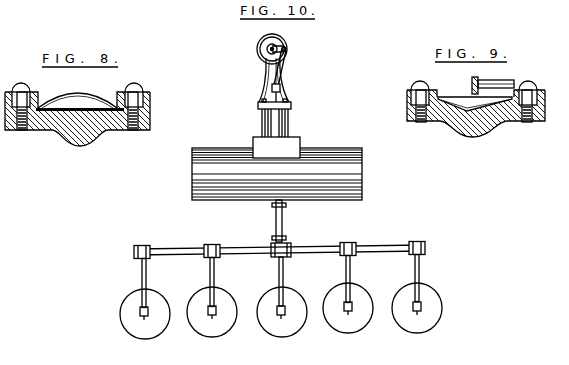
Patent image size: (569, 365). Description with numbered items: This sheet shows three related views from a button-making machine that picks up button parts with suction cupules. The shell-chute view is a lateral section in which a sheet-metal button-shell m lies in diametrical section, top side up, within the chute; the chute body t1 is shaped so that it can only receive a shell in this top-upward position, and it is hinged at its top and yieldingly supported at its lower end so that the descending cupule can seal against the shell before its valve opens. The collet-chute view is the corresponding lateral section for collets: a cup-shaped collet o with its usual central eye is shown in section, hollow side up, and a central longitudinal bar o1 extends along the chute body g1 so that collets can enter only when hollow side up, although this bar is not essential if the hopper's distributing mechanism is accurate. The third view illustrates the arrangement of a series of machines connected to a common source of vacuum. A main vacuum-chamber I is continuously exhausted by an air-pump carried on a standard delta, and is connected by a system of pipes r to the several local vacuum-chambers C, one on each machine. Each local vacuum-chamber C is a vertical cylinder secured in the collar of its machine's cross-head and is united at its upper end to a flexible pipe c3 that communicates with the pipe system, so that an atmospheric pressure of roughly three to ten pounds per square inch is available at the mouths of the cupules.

In FIG. 8, the button-shell m is at (77, 94).
In FIG. 8, the lens holder casing t1 is at (77, 113).
In FIG. 9, the collet o is at (461, 101).
In FIG. 9, the central longitudinal bar o1 is at (471, 63).
In FIG. 9, the holder casing g1 is at (476, 107).
In FIG. 10, the pedestal with wheel delta is at (276, 85).
In FIG. 10, the main vacuum-chamber I is at (277, 168).
In FIG. 10, the system of pipes r is at (279, 229).
In FIG. 10, the flexible pipe c3 is at (285, 288).
In FIG. 10, the local vacuum-chamber C is at (281, 311).